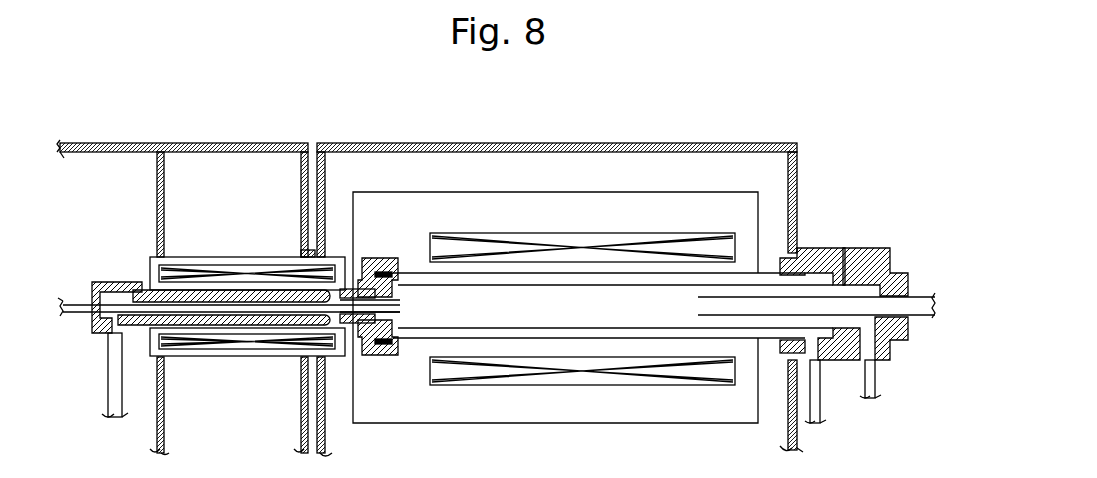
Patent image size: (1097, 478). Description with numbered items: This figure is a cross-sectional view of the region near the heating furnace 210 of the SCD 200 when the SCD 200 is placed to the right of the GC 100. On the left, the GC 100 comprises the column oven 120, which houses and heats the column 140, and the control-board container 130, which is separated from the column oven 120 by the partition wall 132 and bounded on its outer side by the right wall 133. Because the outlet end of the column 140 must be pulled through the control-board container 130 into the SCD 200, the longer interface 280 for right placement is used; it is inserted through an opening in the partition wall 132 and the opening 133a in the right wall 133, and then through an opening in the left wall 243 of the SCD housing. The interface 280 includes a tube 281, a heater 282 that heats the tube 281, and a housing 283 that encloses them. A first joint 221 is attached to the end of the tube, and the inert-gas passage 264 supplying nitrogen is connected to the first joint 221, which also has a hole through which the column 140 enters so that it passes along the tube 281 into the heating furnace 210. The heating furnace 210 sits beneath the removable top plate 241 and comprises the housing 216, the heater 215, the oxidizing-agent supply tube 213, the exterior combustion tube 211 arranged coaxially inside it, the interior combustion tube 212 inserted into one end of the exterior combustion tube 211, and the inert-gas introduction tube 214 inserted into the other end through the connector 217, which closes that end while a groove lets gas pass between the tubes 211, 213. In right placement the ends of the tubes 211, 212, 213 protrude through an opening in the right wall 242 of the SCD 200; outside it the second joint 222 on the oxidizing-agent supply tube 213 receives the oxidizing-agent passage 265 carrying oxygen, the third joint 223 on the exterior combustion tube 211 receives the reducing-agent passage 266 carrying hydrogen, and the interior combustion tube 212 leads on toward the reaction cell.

The GC 100 is at (181, 113).
The column oven 120 is at (102, 163).
The control-board container 130 is at (211, 165).
The partition wall 132 is at (158, 165).
The right wall 133 is at (297, 143).
The opening 133a is at (300, 255).
The column 140 is at (79, 303).
The first joint 221 is at (108, 285).
The SCD 200 is at (678, 120).
The heating furnace 210 is at (730, 188).
The exterior combustion tube 211 is at (425, 332).
The interior combustion tube 212 is at (913, 290).
The oxidizing-agent supply tube 213 is at (407, 332).
The inert-gas introduction tube 214 is at (403, 293).
The heater 215 is at (576, 232).
The housing 216 is at (611, 191).
The connector 217 is at (381, 257).
The second joint 222 is at (820, 248).
The third joint 223 is at (870, 248).
The top plate 241 is at (492, 145).
The right wall 242 is at (798, 175).
The left wall 243 is at (326, 150).
The inert-gas passage 264 is at (108, 371).
The oxidizing-agent passage 265 is at (821, 396).
The reducing-agent passage 266 is at (876, 375).
The interface for right placement 280 is at (208, 252).
The tube 281 is at (200, 331).
The heater 282 is at (238, 346).
The housing 283 is at (283, 357).